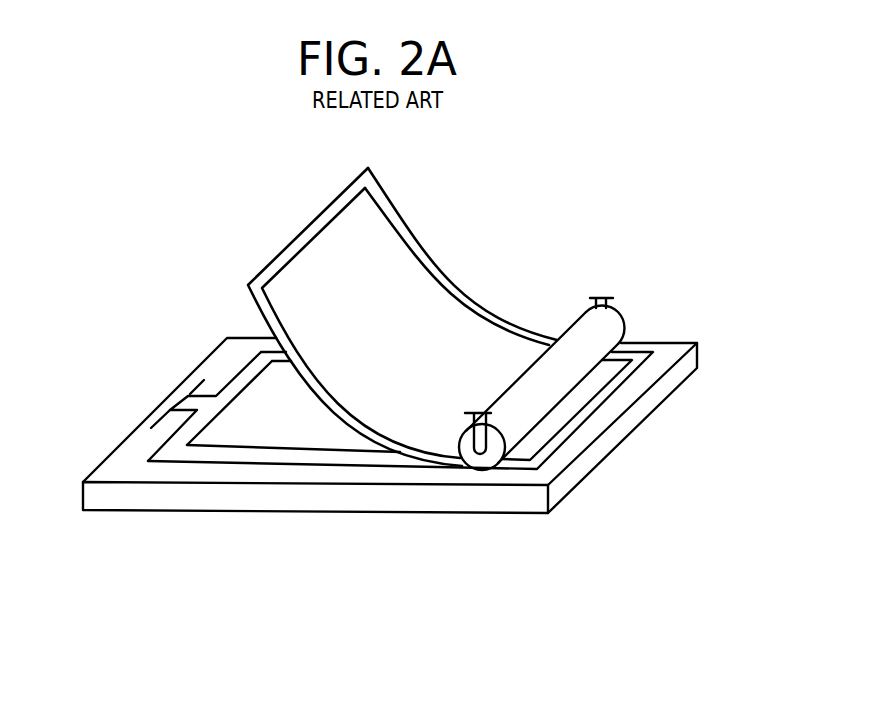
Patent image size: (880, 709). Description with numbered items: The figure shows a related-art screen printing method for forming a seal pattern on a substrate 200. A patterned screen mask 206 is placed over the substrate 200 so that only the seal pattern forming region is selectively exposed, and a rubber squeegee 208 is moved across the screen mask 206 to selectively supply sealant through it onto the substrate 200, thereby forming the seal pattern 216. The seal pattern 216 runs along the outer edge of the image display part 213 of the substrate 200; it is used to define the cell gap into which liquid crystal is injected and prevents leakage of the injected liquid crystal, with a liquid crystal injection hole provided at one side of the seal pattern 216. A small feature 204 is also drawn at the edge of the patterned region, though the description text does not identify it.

The substrate 200 is at (400, 497).
The alignment groove 204 is at (167, 398).
The patterned screen mask 206 is at (419, 252).
The rubber squeegee 208 is at (568, 348).
The image display part 213 is at (268, 442).
The seal pattern 216 is at (206, 463).